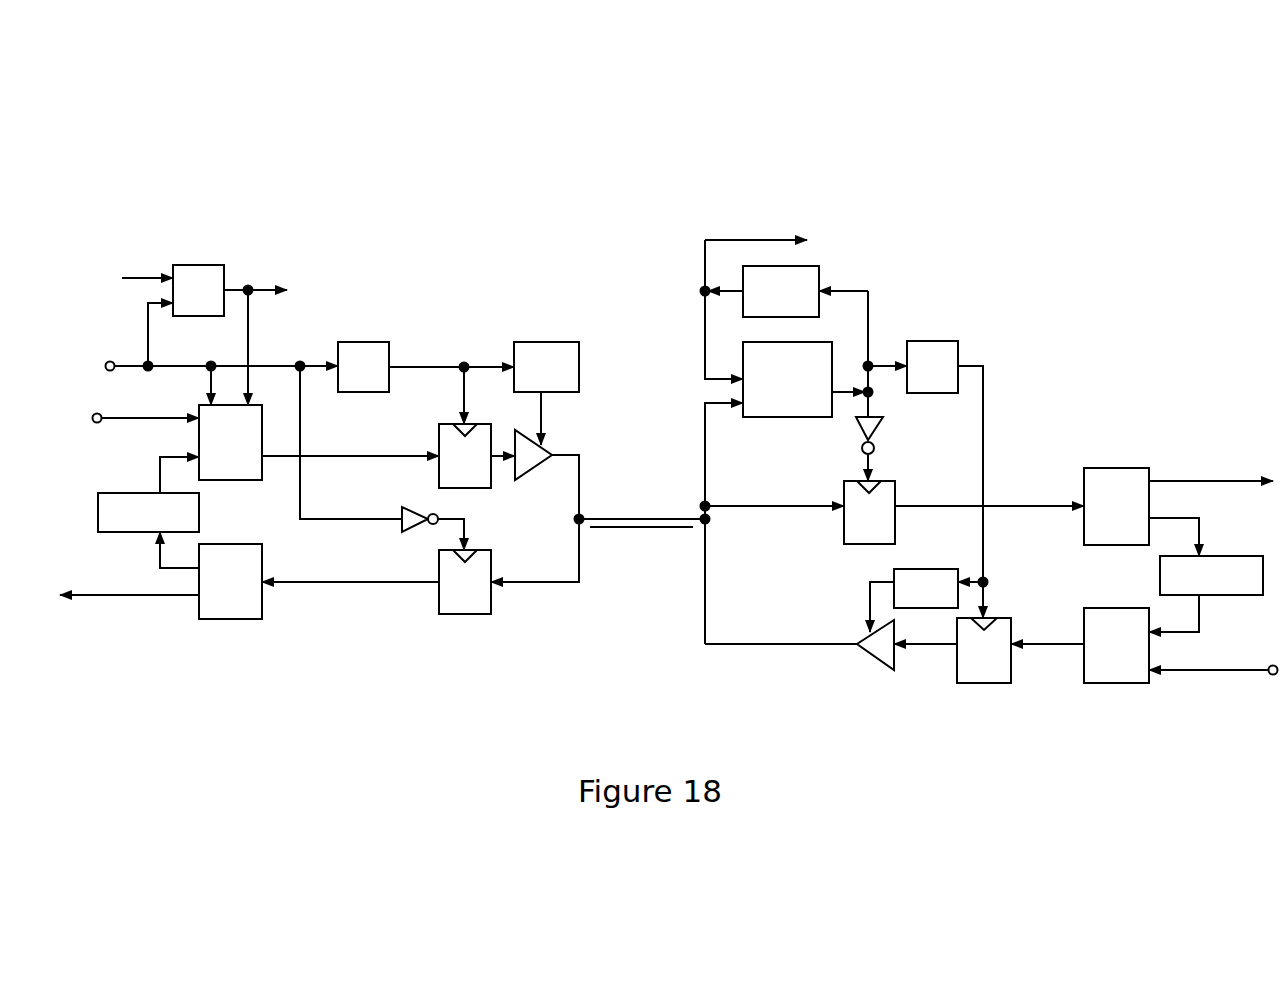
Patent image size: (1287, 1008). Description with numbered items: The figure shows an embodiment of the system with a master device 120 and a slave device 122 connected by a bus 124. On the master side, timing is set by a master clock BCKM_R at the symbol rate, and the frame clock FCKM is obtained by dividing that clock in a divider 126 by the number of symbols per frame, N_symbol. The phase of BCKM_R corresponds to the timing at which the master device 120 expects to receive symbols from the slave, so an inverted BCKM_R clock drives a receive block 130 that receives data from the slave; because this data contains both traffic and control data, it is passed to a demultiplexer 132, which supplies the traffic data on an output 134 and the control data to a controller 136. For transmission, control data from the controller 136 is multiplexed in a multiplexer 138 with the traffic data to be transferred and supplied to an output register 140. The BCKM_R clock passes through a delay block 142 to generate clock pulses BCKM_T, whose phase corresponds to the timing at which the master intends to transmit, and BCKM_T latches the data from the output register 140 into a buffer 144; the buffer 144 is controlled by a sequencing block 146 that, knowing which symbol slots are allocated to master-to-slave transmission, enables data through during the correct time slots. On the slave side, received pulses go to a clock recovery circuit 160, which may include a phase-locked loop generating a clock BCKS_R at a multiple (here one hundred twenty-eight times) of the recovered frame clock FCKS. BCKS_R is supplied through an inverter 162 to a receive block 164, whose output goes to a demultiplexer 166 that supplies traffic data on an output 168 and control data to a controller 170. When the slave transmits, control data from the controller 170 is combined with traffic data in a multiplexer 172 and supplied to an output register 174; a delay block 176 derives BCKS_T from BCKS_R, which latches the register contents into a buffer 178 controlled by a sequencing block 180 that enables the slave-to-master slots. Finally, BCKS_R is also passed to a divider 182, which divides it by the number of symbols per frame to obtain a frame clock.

The master device 120 is at (373, 194).
The slave device 122 is at (1011, 194).
The bus 124 is at (623, 518).
The divider 126 is at (197, 265).
The receive block 130 is at (480, 615).
The demultiplexer 132 is at (255, 620).
The output 134 is at (178, 598).
The controller 136 is at (98, 513).
The multiplexer 138 is at (236, 481).
The output register 140 is at (488, 489).
The delay block 142 is at (365, 342).
The buffer 144 is at (538, 479).
The sequencing block 146 is at (545, 342).
The clock recovery circuit 160 is at (760, 418).
The inverter 162 is at (880, 425).
The receive block 164 is at (896, 484).
The demultiplexer 166 is at (1115, 468).
The output 168 is at (1160, 480).
The controller 170 is at (1160, 584).
The multiplexer 172 is at (1115, 684).
The output register 174 is at (990, 684).
The delay block 176 is at (958, 352).
The buffer 178 is at (875, 665).
The sequencing block 180 is at (894, 570).
The divider 182 is at (819, 270).